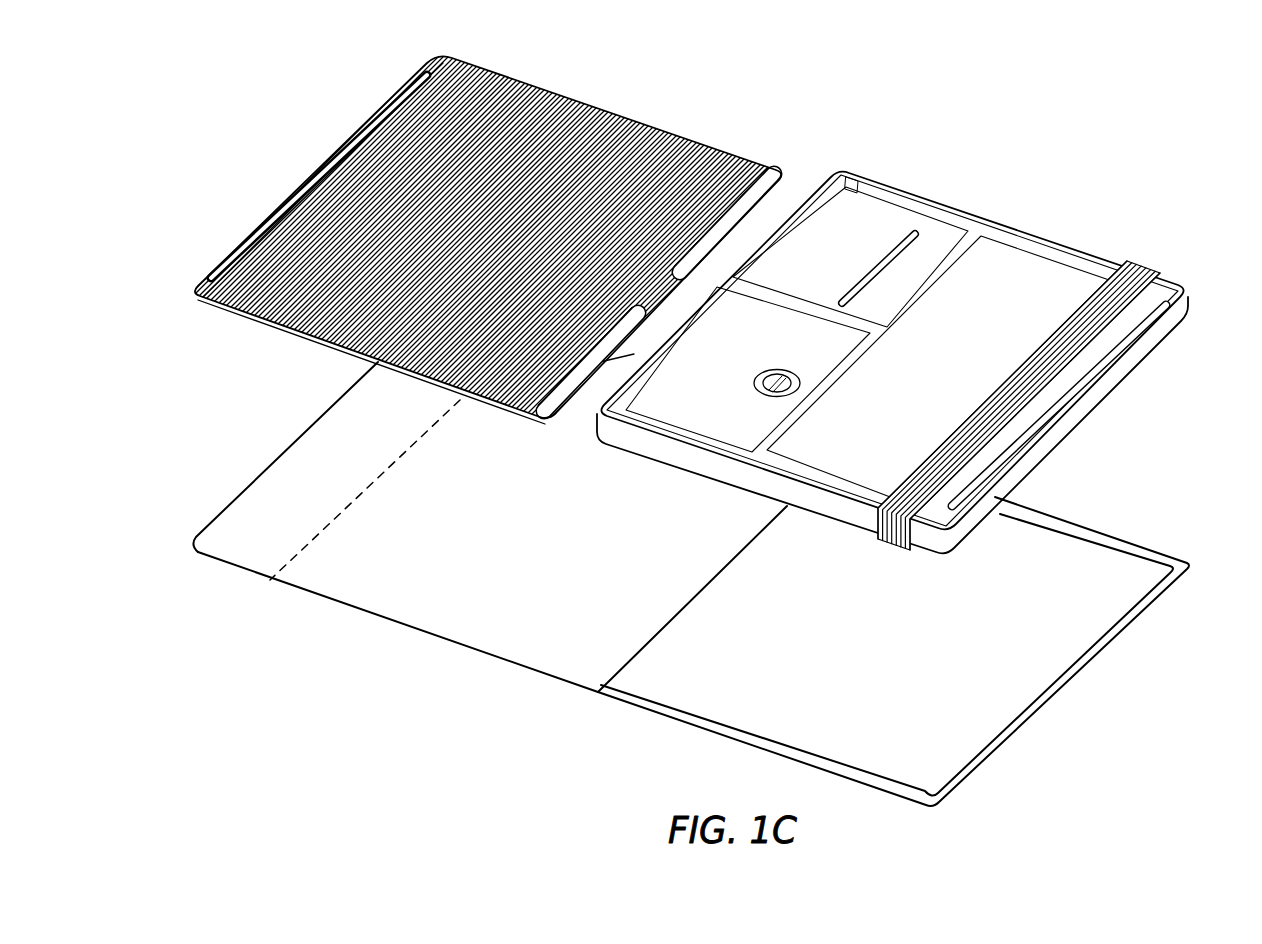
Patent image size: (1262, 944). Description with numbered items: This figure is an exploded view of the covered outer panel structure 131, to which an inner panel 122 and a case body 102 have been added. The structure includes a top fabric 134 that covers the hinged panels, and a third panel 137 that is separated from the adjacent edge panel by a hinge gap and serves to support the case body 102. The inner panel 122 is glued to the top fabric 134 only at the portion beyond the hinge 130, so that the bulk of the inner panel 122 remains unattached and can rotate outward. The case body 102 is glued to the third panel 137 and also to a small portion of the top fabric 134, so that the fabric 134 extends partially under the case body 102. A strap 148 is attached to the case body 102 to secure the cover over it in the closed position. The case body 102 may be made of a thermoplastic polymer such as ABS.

The case body 102 is at (1005, 172).
The inner panel 122 is at (597, 125).
The hinge (gap) 130 is at (262, 590).
The covered outer panel structure 131 is at (411, 680).
The top fabric 134 is at (560, 549).
The third panel 137 is at (900, 647).
The strap 148 is at (1146, 266).